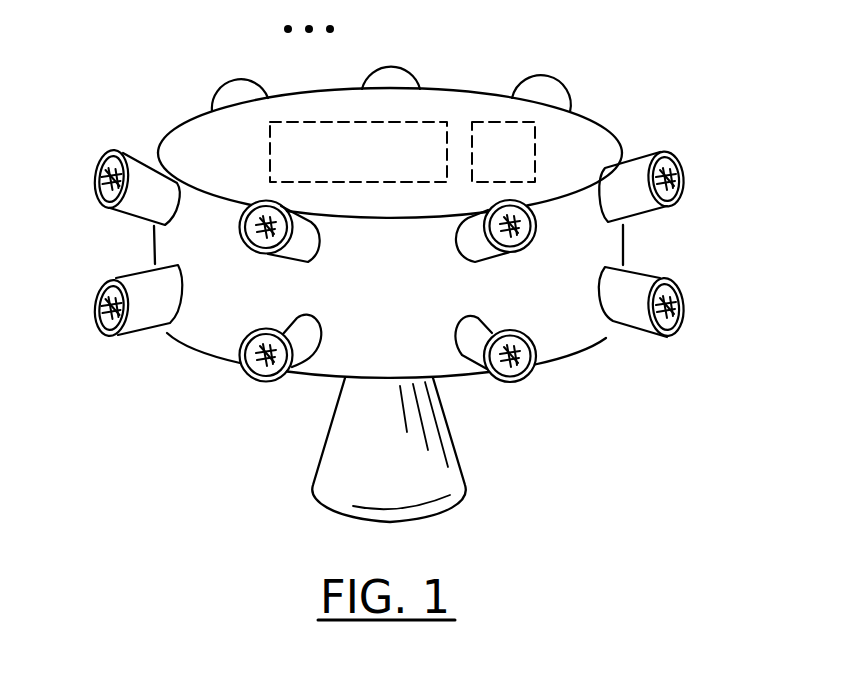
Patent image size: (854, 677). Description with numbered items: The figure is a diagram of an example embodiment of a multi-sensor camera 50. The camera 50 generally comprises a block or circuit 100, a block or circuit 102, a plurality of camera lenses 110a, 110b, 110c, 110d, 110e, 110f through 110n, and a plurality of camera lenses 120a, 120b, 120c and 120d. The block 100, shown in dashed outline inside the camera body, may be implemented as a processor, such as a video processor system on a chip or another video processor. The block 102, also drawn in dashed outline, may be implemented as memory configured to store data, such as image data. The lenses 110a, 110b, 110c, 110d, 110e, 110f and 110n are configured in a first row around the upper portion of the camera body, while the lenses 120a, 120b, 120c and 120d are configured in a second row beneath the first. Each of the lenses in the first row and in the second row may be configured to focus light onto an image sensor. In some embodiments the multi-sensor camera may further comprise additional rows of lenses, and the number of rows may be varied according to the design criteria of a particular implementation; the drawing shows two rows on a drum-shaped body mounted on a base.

The multi-sensor camera 50 is at (177, 128).
The block (or circuit) 100 is at (338, 164).
The block (or circuit) 102 is at (525, 164).
The camera lens 110a is at (108, 210).
The camera lens 110b is at (260, 255).
The camera lens 110c is at (465, 263).
The camera lens 110d is at (662, 148).
The camera lens 110e is at (550, 73).
The camera lens 110f is at (392, 63).
The camera lens 110n is at (235, 75).
The camera lens 120a is at (112, 338).
The camera lens 120b is at (262, 380).
The camera lens 120c is at (517, 382).
The camera lens 120d is at (665, 278).